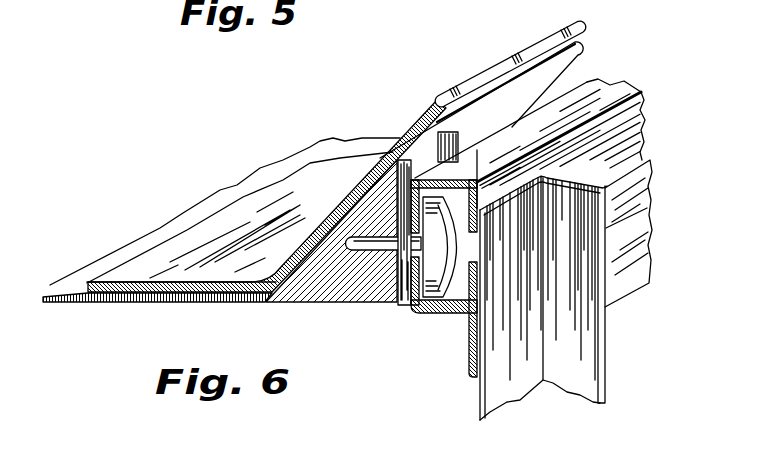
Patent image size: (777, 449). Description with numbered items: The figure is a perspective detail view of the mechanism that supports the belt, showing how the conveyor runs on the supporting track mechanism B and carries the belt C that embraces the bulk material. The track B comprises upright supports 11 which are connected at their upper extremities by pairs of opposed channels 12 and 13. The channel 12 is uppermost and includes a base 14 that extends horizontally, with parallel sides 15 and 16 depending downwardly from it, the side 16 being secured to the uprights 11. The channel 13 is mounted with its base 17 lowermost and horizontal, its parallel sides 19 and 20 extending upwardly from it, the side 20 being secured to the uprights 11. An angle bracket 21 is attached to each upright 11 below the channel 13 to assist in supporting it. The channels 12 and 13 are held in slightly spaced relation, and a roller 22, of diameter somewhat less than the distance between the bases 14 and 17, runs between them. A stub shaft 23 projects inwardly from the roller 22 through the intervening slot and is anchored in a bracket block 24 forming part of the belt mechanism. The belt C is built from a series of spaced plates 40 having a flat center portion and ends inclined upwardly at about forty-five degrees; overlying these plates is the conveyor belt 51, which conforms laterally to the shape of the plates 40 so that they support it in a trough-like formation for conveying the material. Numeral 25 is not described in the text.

The upright support 11 is at (580, 373).
The channel 12 is at (628, 129).
The channel 13 is at (648, 185).
The base 14 is at (598, 93).
The side 15 is at (378, 193).
The side 16 is at (596, 144).
The base 17 is at (450, 313).
The side 19 is at (383, 305).
The side 20 is at (639, 205).
The angle bracket 21 is at (468, 367).
The roller 22 is at (460, 244).
The stub shaft 23 is at (362, 246).
The bracket block 24 is at (300, 302).
The blade assembly 25 is at (578, 33).
The plate 40 is at (97, 303).
The conveyor belt 51 is at (220, 233).
The supporting track mechanism B is at (636, 117).
The conveyor belt C is at (257, 193).